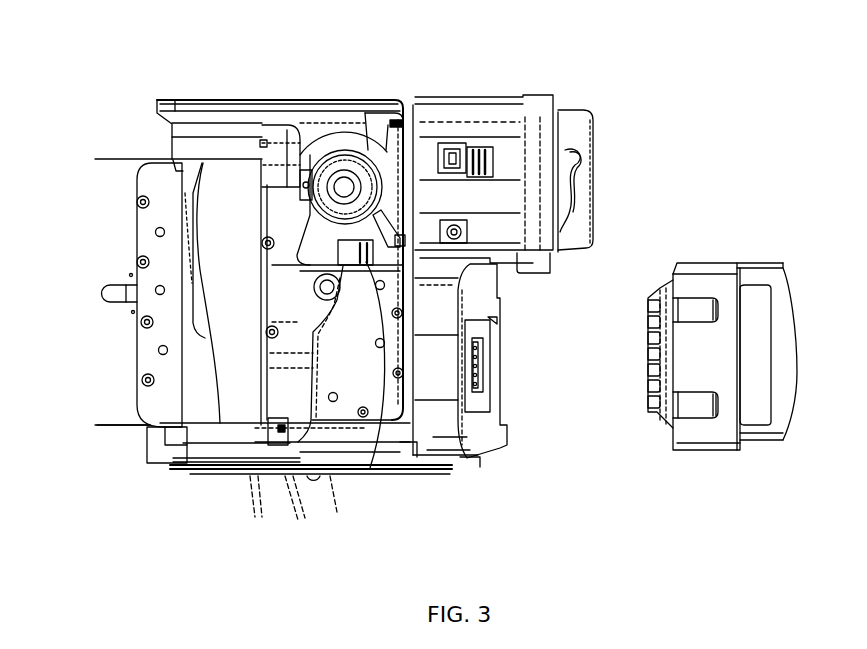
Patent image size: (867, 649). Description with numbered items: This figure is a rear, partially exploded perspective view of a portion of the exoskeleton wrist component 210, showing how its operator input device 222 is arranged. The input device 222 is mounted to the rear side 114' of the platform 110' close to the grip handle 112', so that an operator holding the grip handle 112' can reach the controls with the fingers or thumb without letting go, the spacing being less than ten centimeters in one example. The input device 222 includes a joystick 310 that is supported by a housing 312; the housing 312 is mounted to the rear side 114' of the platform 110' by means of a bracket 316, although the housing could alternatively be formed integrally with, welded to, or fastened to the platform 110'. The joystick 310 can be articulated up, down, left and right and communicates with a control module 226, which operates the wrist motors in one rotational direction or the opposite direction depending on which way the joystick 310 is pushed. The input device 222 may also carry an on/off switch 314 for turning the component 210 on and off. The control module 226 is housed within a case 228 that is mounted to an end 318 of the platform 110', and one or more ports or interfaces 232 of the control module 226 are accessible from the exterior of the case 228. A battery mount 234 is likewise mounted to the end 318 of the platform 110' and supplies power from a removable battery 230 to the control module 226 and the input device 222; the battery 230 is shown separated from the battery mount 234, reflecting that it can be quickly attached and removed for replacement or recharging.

The platform 110' is at (138, 293).
The grip handle 112' is at (127, 291).
The rear side 114' is at (89, 328).
The component 210 is at (710, 210).
The input device 222 is at (275, 177).
The control module 226 is at (582, 193).
The case 228 is at (570, 137).
The battery 230 is at (750, 425).
The ports or interfaces 232 is at (455, 147).
The battery mount 234 is at (485, 390).
The joystick 310 is at (345, 183).
The housing 312 is at (330, 122).
The on/off switch 314 is at (388, 405).
The bracket 316 is at (262, 158).
The end 318 is at (413, 278).